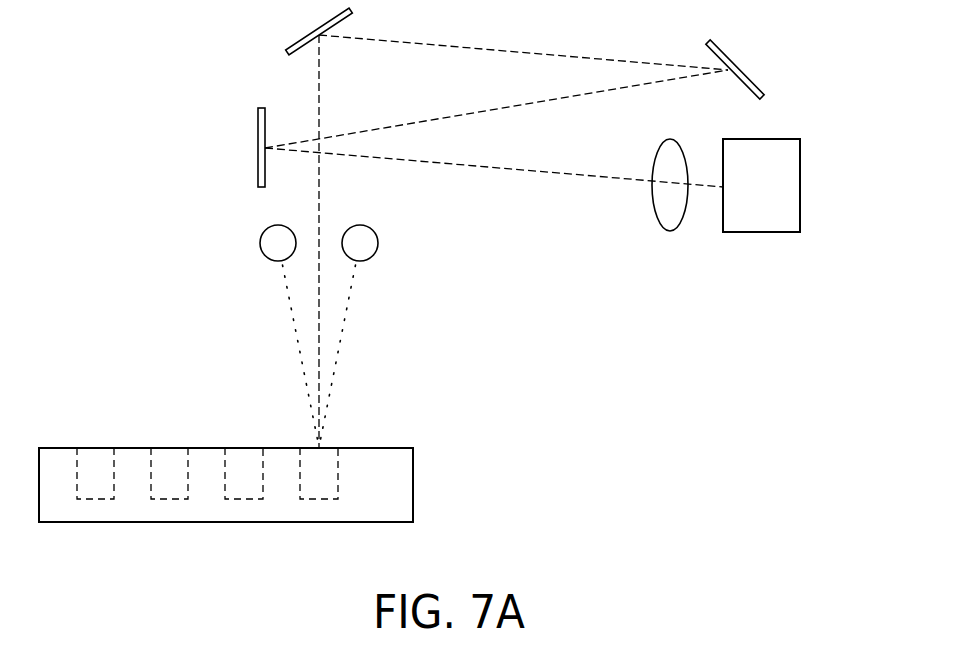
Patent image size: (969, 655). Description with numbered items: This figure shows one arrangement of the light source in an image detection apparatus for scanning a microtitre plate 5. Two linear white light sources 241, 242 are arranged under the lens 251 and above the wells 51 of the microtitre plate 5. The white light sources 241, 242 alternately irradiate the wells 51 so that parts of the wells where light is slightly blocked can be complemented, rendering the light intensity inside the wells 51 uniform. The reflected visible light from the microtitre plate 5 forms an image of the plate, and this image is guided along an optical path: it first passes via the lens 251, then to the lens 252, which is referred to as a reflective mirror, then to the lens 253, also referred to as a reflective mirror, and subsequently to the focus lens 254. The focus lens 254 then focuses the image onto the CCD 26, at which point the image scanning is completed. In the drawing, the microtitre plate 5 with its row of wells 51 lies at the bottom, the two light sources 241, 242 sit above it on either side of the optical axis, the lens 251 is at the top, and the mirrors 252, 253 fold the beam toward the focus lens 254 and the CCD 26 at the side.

The lens 251 is at (290, 48).
The lens (reflective mirror) 252 is at (724, 60).
The lens (reflective mirror) 253 is at (258, 133).
The focus lens 254 is at (656, 213).
The CCD 26 is at (800, 187).
The linear white light source 241 is at (264, 252).
The linear white light source 242 is at (378, 250).
The microtitre plate 5 is at (396, 479).
The well 51 is at (326, 472).